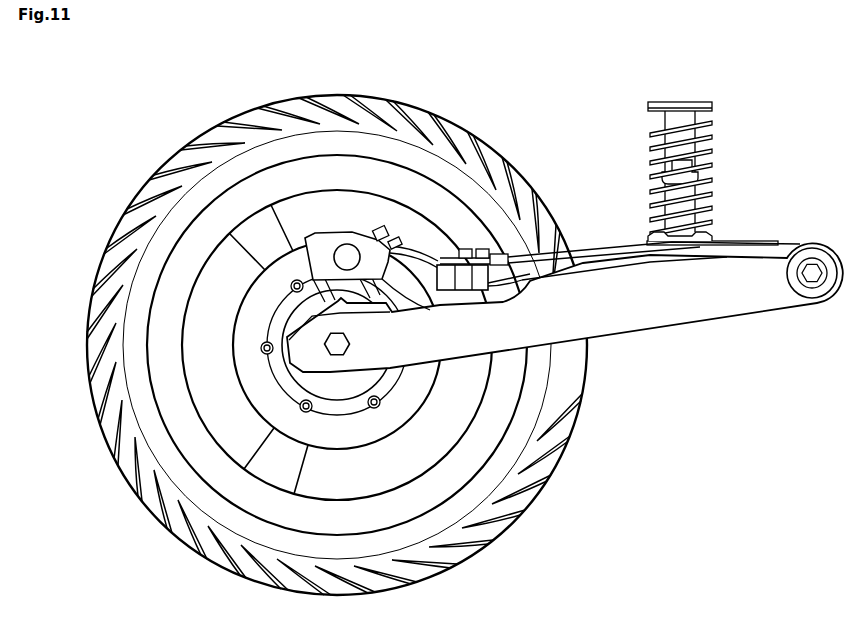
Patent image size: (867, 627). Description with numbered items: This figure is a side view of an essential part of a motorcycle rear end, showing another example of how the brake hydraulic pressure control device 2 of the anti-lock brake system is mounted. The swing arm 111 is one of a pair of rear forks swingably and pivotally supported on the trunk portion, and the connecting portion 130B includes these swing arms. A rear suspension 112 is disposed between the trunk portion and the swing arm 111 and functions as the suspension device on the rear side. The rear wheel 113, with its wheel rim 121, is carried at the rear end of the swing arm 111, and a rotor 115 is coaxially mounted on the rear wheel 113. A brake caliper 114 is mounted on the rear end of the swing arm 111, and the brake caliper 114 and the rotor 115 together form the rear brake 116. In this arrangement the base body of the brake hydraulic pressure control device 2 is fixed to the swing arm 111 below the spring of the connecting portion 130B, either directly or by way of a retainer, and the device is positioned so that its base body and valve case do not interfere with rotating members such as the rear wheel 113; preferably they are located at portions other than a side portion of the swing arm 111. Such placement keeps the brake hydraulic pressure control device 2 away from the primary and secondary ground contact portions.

The brake hydraulic pressure control device 2 is at (465, 272).
The swing arm 111 is at (626, 322).
The rear suspension 112 is at (692, 133).
The rear wheel 113 is at (561, 486).
The brake caliper 114 is at (325, 235).
The rotor 115 is at (260, 388).
The rear brake 116 is at (225, 293).
The wheel rim 121 is at (490, 415).
The connecting portion 130B is at (565, 271).